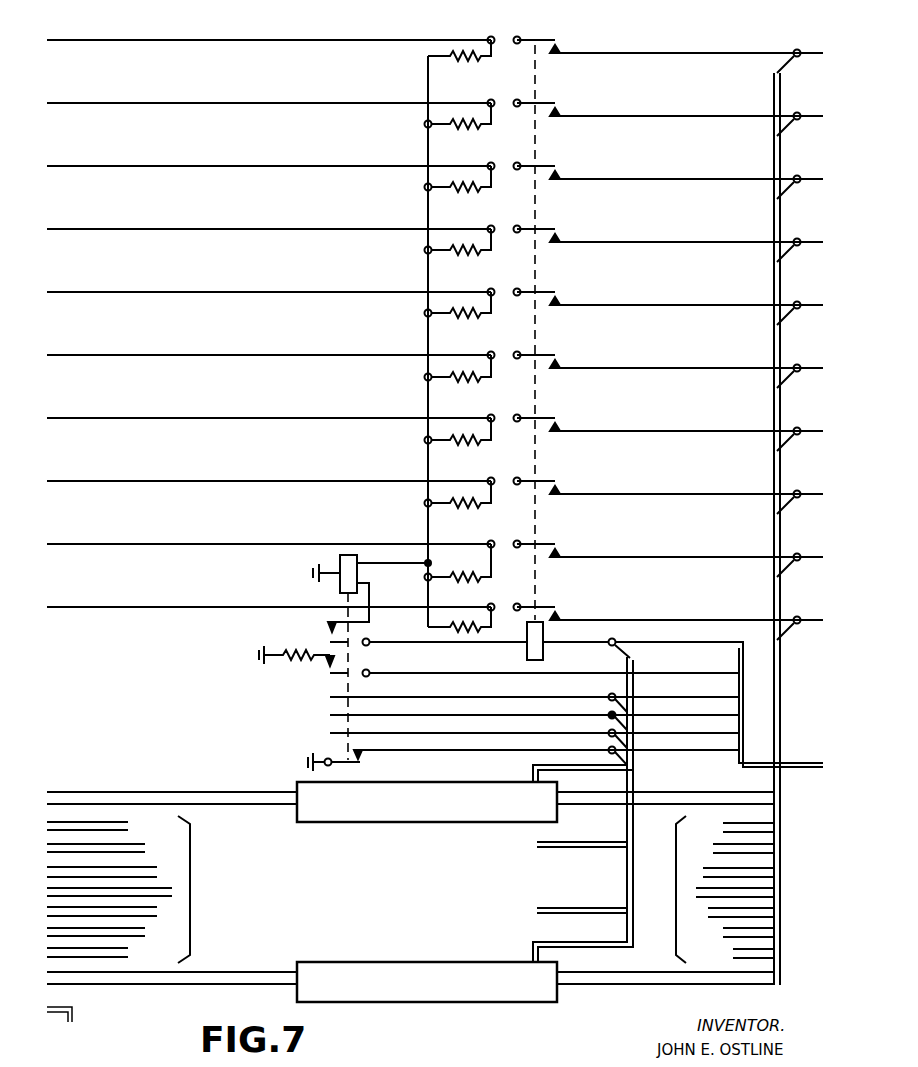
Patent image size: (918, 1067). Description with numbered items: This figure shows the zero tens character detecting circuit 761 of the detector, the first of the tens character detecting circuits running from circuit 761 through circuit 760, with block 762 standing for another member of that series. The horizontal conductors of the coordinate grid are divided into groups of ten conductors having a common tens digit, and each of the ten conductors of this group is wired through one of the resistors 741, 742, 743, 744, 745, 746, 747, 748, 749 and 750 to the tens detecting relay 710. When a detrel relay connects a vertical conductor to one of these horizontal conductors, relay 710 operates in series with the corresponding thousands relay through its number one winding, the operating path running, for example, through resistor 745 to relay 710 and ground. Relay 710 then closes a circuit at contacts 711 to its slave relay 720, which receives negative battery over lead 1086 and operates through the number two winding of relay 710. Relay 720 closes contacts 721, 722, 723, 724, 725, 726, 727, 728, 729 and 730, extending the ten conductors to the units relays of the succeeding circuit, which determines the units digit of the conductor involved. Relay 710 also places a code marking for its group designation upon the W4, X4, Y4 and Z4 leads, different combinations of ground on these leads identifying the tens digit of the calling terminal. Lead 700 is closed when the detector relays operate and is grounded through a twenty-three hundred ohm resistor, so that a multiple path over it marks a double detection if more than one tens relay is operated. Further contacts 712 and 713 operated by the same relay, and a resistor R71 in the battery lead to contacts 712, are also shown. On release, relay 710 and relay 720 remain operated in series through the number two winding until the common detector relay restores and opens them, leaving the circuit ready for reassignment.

The tens character detecting circuit 761 is at (383, 18).
The contacts of slave relay 721 is at (560, 48).
The contacts of slave relay 722 is at (560, 111).
The contacts of slave relay 723 is at (560, 174).
The contacts of slave relay 724 is at (560, 237).
The contacts of slave relay 725 is at (560, 300).
The contacts of slave relay 726 is at (560, 363).
The contacts of slave relay 727 is at (560, 426).
The contacts of slave relay 728 is at (560, 489).
The contacts of slave relay 729 is at (560, 552).
The contacts of slave relay 730 is at (560, 615).
The resistor 741 is at (462, 62).
The resistor 742 is at (462, 130).
The resistor 743 is at (462, 193).
The resistor 744 is at (462, 256).
The resistor 745 is at (462, 319).
The resistor 746 is at (462, 383).
The resistor 747 is at (462, 446).
The resistor 748 is at (462, 509).
The resistor 749 is at (462, 583).
The resistor 750 is at (462, 633).
The tens detecting relay 710 is at (338, 593).
The contacts of tens detecting relay 711 is at (326, 631).
The contact 712 is at (324, 667).
The contact 713 is at (364, 760).
The resistor R71 is at (292, 649).
The slave relay 720 is at (545, 652).
The lead 1086 is at (666, 629).
The lead 700 is at (667, 659).
The lead W4 is at (667, 685).
The lead X4 is at (667, 703).
The lead Y4 is at (667, 721).
The lead Z4 is at (667, 739).
The register 762 is at (410, 802).
The tens character detecting circuit 760 is at (410, 982).